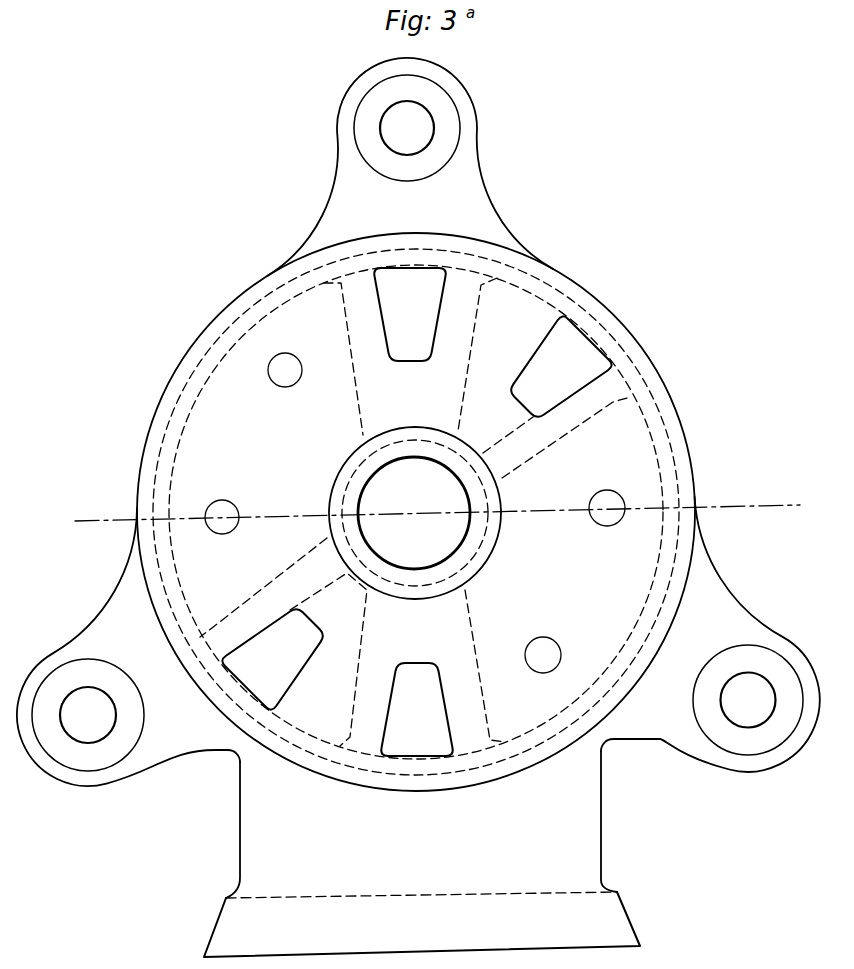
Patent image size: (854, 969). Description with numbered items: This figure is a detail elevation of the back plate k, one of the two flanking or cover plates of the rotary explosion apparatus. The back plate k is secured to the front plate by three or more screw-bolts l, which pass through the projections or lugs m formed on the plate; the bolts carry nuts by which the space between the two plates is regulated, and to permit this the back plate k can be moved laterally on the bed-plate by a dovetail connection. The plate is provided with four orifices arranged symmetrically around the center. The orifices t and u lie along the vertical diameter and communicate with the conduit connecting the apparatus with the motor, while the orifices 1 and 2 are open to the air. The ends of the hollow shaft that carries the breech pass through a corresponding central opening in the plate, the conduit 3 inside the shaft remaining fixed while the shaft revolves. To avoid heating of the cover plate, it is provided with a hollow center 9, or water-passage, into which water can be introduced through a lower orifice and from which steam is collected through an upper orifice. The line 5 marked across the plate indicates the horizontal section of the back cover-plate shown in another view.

The screw-bolts l is at (418, 422).
The lugs m is at (418, 422).
The orifice t is at (409, 314).
The orifice u is at (416, 709).
The orifice 2 is at (556, 372).
The orifice 1 is at (278, 654).
The hollow center 9 is at (215, 533).
The conduit 3 is at (546, 668).
The section line 5 is at (437, 512).
The back plate k is at (421, 824).
The foot flange n is at (422, 924).